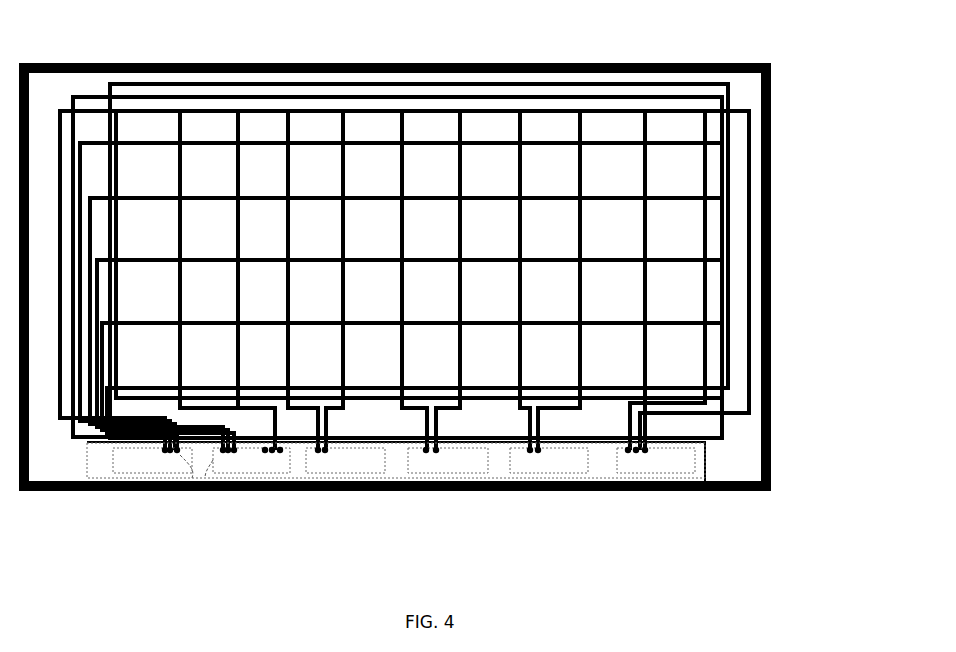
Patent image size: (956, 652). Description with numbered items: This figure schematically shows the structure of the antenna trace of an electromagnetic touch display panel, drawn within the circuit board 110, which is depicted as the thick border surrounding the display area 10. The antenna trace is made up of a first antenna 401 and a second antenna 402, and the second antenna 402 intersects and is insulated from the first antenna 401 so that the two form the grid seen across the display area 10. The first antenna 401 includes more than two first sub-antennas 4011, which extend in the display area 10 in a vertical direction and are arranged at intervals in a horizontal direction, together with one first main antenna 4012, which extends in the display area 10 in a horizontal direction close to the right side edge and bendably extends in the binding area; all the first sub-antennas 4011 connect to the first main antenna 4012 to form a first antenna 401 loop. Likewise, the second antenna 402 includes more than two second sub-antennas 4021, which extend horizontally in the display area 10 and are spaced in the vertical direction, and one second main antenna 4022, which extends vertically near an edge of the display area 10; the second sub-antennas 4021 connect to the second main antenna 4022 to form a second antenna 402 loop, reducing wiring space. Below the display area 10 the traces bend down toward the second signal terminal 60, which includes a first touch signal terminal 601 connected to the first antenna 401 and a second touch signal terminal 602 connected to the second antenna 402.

The circuit board 110 is at (87, 462).
The first antenna 401 is at (271, 8).
The first sub-antenna 4011 is at (117, 115).
The first main antenna 4012 is at (182, 110).
The second antenna 402 is at (836, 133).
The second sub-antenna 4021 is at (690, 142).
The second main antenna 4022 is at (730, 157).
The display area 10 is at (590, 400).
The second signal terminal 60 is at (307, 528).
The first touch signal terminal 601 is at (283, 458).
The second touch signal terminal 602 is at (198, 478).